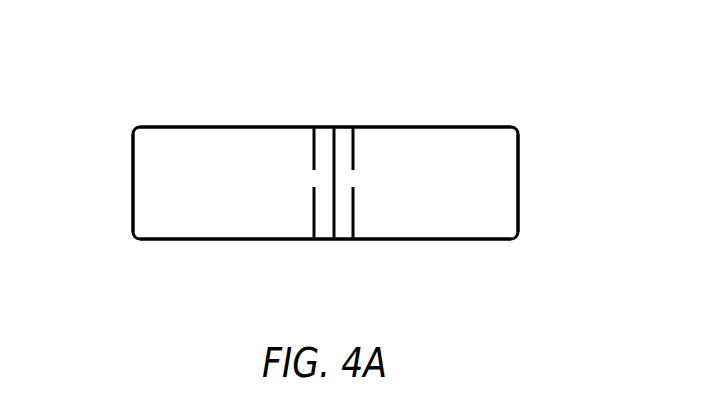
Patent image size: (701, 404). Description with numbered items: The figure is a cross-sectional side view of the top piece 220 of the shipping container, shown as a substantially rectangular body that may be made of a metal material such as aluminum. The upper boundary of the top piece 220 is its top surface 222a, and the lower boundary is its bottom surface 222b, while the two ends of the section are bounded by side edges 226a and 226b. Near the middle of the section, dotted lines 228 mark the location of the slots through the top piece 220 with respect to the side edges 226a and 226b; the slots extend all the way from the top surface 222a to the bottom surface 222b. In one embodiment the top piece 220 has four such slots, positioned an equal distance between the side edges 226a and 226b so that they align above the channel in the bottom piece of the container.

The top piece 220 is at (527, 85).
The top surface 222a is at (202, 125).
The bottom surface 222b is at (202, 240).
The side edge 226a is at (519, 218).
The side edge 226b is at (132, 218).
The dotted lines 228 is at (315, 125).